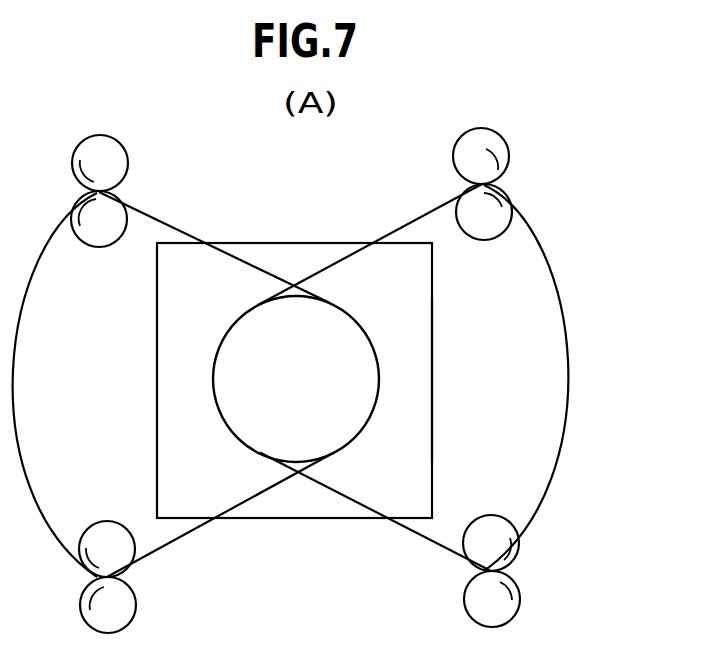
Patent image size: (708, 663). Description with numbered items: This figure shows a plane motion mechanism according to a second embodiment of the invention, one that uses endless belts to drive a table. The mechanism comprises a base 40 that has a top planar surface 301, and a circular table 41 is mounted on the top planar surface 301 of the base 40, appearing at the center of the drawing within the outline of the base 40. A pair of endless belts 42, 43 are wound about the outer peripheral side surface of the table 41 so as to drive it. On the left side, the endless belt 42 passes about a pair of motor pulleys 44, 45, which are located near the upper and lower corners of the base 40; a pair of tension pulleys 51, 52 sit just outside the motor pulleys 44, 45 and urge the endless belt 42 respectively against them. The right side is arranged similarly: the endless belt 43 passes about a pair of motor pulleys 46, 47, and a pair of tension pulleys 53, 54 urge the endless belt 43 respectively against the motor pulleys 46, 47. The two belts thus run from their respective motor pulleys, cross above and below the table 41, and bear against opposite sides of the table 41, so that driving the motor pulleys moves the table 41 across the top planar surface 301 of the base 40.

The base 40 is at (411, 346).
The table 41 is at (233, 379).
The endless belt 42 is at (25, 447).
The endless belt 43 is at (565, 441).
The motor pulley 44 is at (103, 236).
The motor pulley 45 is at (112, 533).
The motor pulley 46 is at (483, 228).
The motor pulley 47 is at (486, 534).
The tension pulley 51 is at (118, 160).
The tension pulley 52 is at (121, 607).
The tension pulley 53 is at (497, 153).
The tension pulley 54 is at (499, 605).
The top planar surface 301 is at (418, 398).